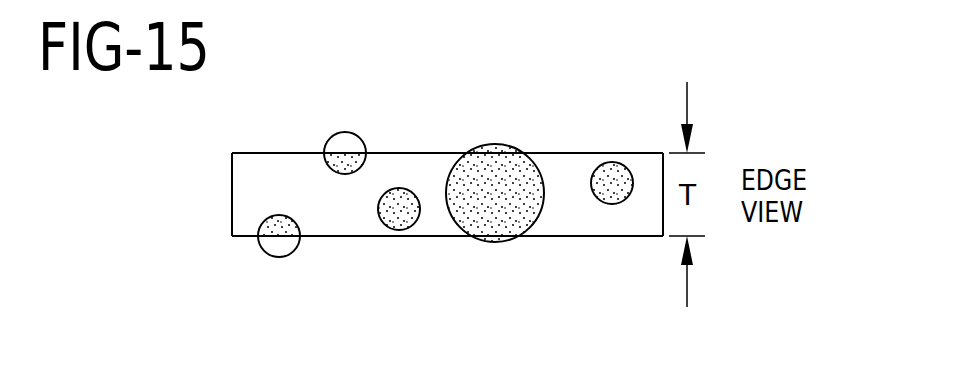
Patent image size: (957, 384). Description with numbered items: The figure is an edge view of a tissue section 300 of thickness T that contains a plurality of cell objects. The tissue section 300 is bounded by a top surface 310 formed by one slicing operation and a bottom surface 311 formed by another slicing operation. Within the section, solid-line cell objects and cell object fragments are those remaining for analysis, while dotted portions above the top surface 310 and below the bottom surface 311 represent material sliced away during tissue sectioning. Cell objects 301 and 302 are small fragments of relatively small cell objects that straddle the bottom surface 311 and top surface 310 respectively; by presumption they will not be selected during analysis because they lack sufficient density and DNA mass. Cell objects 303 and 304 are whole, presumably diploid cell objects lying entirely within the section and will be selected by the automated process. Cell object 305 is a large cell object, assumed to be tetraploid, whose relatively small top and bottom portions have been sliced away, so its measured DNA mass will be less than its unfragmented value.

The tissue section 300 is at (313, 128).
The cell object fragment 301 is at (279, 215).
The cell object fragment 302 is at (345, 174).
The whole cell object 303 is at (400, 188).
The whole cell object 304 is at (608, 204).
The large cell object 305 is at (452, 214).
The top surface 310 is at (573, 153).
The bottom surface 311 is at (557, 236).